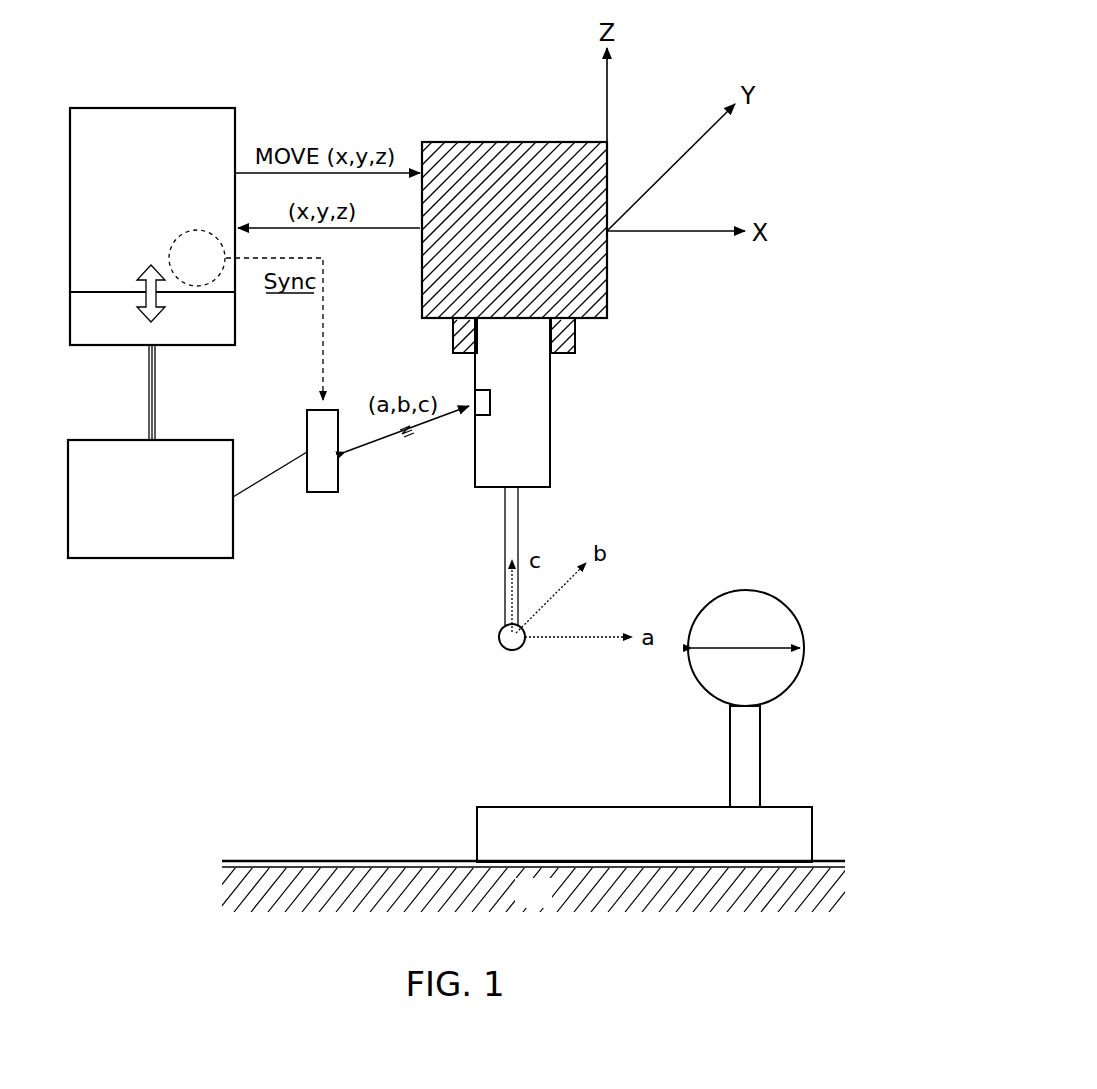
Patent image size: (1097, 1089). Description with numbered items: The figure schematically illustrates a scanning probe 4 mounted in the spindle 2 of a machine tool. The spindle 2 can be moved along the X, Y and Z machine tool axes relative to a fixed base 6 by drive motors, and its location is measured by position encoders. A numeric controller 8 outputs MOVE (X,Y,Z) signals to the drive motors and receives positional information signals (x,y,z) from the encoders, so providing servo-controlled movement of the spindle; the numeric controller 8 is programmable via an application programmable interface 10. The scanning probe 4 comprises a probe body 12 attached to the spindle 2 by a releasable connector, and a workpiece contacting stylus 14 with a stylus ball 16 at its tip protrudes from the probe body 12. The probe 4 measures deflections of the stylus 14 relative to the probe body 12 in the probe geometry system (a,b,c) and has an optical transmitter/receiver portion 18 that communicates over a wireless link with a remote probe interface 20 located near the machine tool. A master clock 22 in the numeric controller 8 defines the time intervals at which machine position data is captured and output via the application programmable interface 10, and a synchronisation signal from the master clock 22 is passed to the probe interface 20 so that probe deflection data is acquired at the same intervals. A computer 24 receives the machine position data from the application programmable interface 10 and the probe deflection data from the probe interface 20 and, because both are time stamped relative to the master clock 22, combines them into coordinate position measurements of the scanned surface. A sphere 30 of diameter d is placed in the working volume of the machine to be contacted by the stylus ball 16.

The spindle 2 is at (596, 329).
The scanning probe 4 is at (571, 421).
The fixed base 6 is at (525, 906).
The numeric controller 8 is at (143, 201).
The application programmable interface 10 is at (185, 335).
The probe body 12 is at (498, 449).
The stylus 14 is at (500, 558).
The stylus ball 16 is at (499, 640).
The optical transmitter/receiver portion 18 is at (479, 396).
The probe interface 20 is at (324, 493).
The master clock 22 is at (182, 272).
The computer 24 is at (135, 536).
The sphere 30 is at (731, 636).